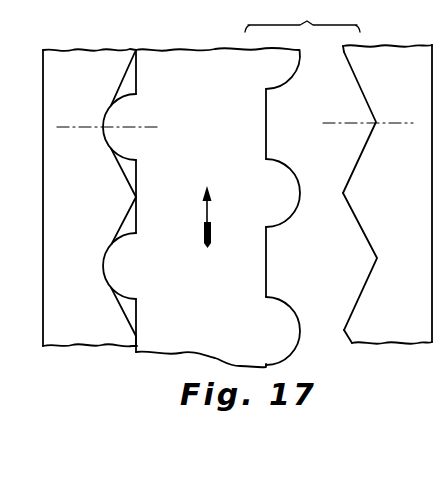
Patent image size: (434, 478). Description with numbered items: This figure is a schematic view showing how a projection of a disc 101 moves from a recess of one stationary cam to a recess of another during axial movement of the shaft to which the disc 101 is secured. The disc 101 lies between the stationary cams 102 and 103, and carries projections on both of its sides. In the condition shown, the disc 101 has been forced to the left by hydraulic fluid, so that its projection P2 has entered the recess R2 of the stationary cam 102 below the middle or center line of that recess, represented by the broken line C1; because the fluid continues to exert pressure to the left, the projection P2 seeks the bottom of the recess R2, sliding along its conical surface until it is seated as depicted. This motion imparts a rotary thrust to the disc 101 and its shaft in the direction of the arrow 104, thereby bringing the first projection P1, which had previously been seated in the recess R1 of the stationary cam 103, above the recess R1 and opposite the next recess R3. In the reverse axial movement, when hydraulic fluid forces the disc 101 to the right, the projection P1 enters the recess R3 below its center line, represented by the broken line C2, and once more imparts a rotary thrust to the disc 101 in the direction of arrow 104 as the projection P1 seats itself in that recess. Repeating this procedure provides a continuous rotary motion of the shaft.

The disc 101 is at (180, 58).
The stationary cam 102 is at (66, 56).
The stationary cam 103 is at (366, 55).
The arrow 104 is at (208, 214).
The recess R1 is at (376, 260).
The recess R2 is at (106, 108).
The recess R3 is at (375, 118).
The projection P1 is at (287, 187).
The projection P2 is at (122, 104).
The center line C1 is at (77, 126).
The center line C2 is at (395, 124).